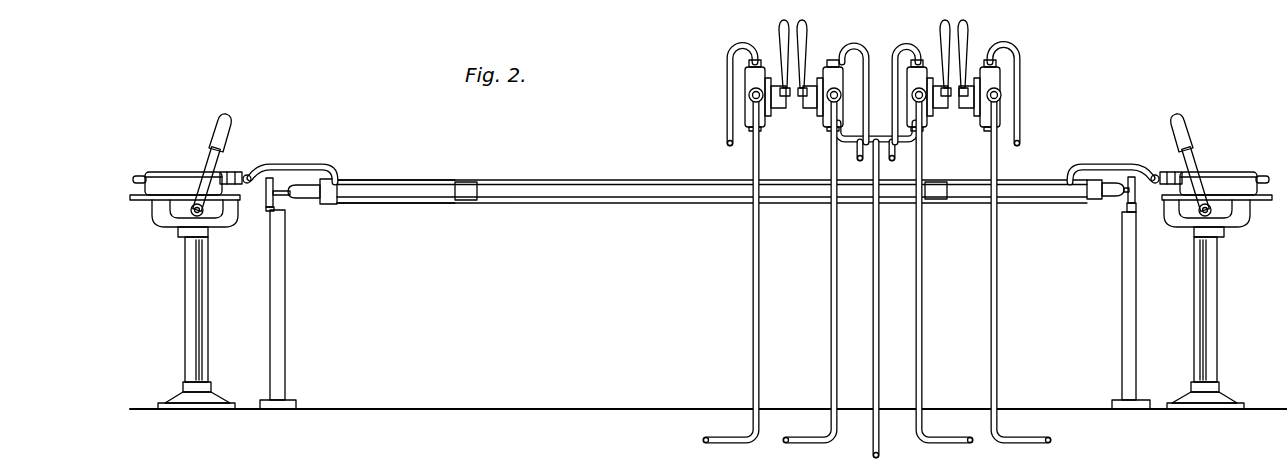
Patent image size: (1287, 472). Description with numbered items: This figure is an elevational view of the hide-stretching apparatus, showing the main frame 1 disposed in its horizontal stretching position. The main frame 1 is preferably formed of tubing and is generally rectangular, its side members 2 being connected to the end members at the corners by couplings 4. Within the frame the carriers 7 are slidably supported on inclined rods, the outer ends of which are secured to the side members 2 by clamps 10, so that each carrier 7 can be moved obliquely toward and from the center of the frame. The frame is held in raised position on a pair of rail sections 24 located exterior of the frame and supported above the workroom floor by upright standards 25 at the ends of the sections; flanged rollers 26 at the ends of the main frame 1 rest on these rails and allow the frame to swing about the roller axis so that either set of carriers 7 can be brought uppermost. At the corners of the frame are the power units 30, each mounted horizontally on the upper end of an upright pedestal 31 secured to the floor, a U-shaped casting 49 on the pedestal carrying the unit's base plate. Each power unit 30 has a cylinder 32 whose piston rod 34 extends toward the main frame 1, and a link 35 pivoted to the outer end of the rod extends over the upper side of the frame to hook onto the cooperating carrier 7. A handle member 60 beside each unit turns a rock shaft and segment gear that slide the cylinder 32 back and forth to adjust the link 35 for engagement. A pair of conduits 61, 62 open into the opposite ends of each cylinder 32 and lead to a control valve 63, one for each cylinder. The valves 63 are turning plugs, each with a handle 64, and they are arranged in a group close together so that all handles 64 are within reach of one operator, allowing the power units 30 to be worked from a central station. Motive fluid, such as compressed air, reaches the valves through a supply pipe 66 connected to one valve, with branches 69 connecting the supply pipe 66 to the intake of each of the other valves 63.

The main frame 1 is at (545, 181).
The side member 2 is at (560, 196).
The coupling 4 is at (313, 188).
The carrier 7 is at (405, 180).
The clamp 10 is at (465, 201).
The rail section 24 is at (268, 208).
The upright standard 25 is at (286, 324).
The flanged roller 26 is at (277, 196).
The power unit 30 is at (166, 171).
The pedestal 31 is at (206, 332).
The cylinder 32 is at (188, 172).
The piston rod 34 is at (247, 174).
The link 35 is at (300, 166).
The U-shaped casting 49 is at (168, 226).
The handle member 60 is at (231, 125).
The conduit 61 is at (737, 46).
The conduit 62 is at (870, 438).
The control valve 63 is at (822, 82).
The handle 64 is at (780, 30).
The supply pipe 66 is at (752, 266).
The branch 69 is at (830, 293).